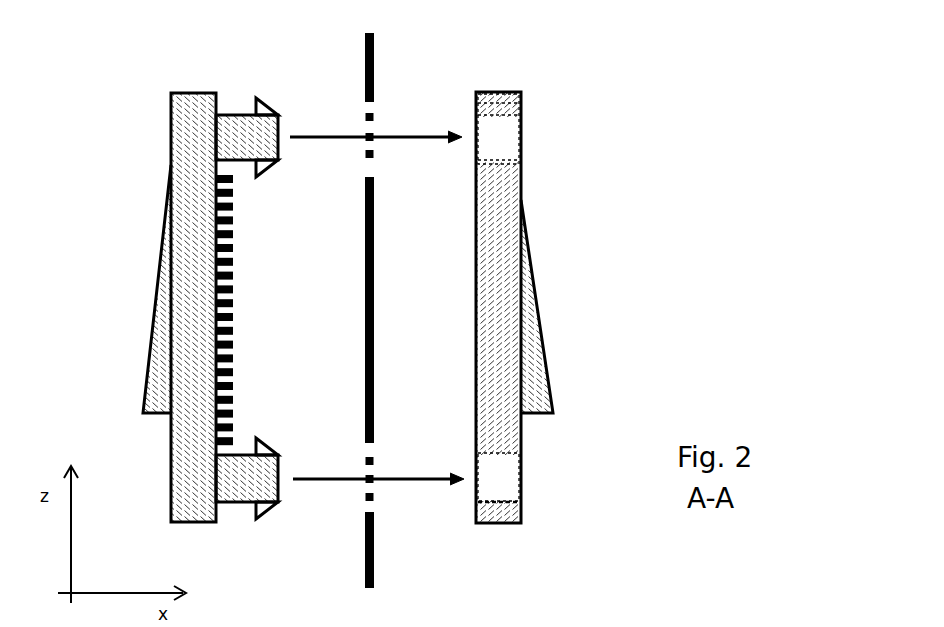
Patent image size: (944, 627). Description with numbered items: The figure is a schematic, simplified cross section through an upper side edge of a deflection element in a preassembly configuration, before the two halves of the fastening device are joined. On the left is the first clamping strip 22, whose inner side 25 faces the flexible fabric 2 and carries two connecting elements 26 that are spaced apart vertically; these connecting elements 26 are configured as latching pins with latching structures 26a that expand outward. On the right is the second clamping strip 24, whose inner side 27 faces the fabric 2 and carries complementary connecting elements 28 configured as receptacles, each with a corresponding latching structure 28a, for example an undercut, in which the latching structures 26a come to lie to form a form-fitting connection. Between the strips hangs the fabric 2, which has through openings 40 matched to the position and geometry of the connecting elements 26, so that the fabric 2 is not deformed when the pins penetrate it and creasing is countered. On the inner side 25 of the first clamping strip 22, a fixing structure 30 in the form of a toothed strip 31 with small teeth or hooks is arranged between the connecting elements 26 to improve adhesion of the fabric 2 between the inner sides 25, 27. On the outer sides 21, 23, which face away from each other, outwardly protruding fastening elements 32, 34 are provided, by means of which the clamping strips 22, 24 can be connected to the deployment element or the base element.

The flexible fabric 2 is at (374, 59).
The outer side of first clamping strip 21 is at (130, 291).
The first clamping strip 22 is at (189, 108).
The outer side of second clamping strip 23 is at (558, 288).
The second clamping strip 24 is at (503, 186).
The inner side of first clamping strip 25 is at (254, 265).
The connecting element 26 is at (232, 487).
The latching structure 26a is at (263, 513).
The inner side of second clamping strip 27 is at (466, 322).
The connecting element 28 is at (500, 475).
The latching structure 28a is at (513, 504).
The fixing structure 30 is at (241, 367).
The toothed strip 31 is at (232, 310).
The fastening element 32 is at (152, 347).
The fastening element 34 is at (533, 366).
The through opening 40 is at (382, 116).